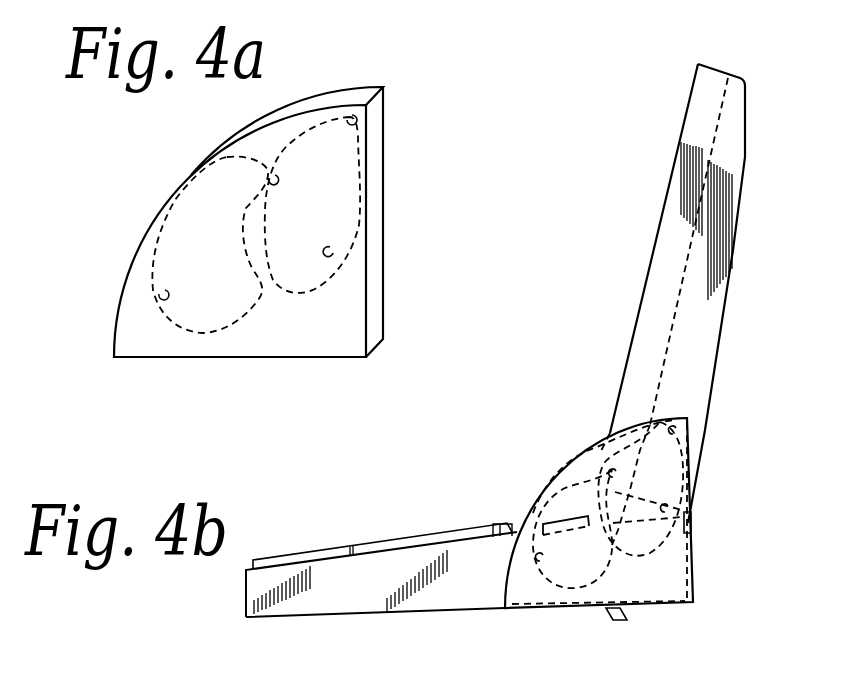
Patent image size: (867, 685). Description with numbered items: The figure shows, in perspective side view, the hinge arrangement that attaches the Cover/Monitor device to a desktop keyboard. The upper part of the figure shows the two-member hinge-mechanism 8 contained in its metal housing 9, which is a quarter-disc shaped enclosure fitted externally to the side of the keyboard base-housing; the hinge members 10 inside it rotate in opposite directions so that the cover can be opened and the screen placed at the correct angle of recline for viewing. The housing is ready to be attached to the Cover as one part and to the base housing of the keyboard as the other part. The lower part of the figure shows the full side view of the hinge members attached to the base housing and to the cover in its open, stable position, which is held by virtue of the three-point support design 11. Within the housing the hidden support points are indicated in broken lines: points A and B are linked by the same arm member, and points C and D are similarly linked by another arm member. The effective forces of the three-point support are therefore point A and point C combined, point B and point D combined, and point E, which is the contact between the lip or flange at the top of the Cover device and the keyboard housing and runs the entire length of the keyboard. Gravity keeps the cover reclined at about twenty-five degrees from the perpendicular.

In FIG. 4B, the two-member hinge-mechanism 8 is at (693, 570).
In FIG. 4A, the metal housing 9 is at (385, 167).
In FIG. 4A, the hinge members 10 is at (293, 253).
In FIG. 4B, the 3-point support design 11 is at (583, 448).
In FIG. 4A, the point A is at (352, 121).
In FIG. 4B, the point A is at (676, 428).
In FIG. 4A, the point B is at (333, 250).
In FIG. 4B, the point B is at (668, 507).
In FIG. 4A, the point C is at (270, 178).
In FIG. 4B, the point C is at (613, 474).
In FIG. 4A, the point D is at (163, 293).
In FIG. 4B, the point D is at (538, 557).
In FIG. 4B, the point E is at (693, 533).